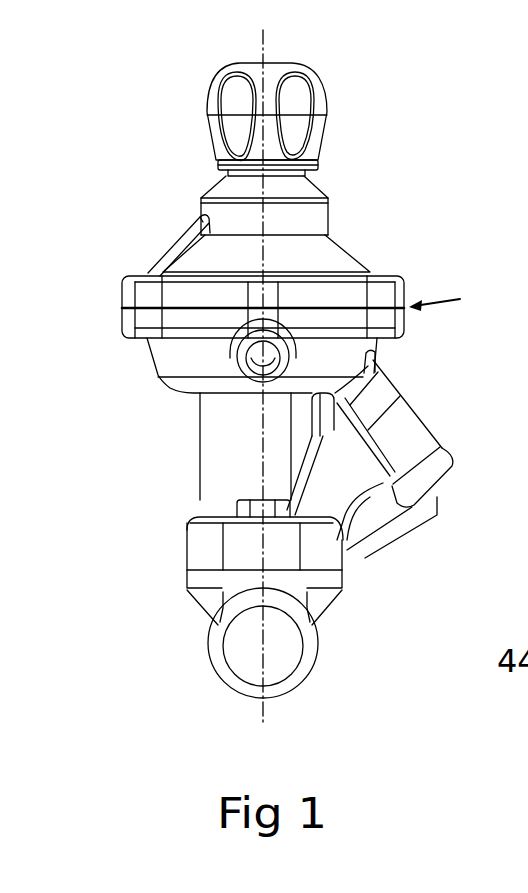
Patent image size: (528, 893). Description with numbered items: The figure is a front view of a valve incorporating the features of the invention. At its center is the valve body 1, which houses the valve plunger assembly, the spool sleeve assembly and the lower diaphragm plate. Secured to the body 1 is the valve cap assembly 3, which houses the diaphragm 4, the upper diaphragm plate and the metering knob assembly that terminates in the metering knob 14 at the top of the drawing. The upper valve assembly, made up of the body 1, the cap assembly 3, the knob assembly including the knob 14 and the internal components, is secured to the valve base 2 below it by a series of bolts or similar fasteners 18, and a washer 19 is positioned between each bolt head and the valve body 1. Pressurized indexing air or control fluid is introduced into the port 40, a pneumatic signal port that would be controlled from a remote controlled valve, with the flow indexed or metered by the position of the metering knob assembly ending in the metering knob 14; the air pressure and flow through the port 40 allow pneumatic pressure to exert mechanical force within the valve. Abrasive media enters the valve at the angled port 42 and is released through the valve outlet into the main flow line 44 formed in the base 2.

The valve body 1 is at (158, 363).
The valve base 2 is at (317, 577).
The valve cap assembly 3 is at (337, 254).
The diaphragm 4 is at (448, 288).
The metering knob 14 is at (313, 78).
The fasteners 18 is at (237, 503).
The washer 19 is at (243, 520).
The port 40 is at (247, 364).
The port 42 is at (417, 408).
The main flow line 44 is at (285, 650).